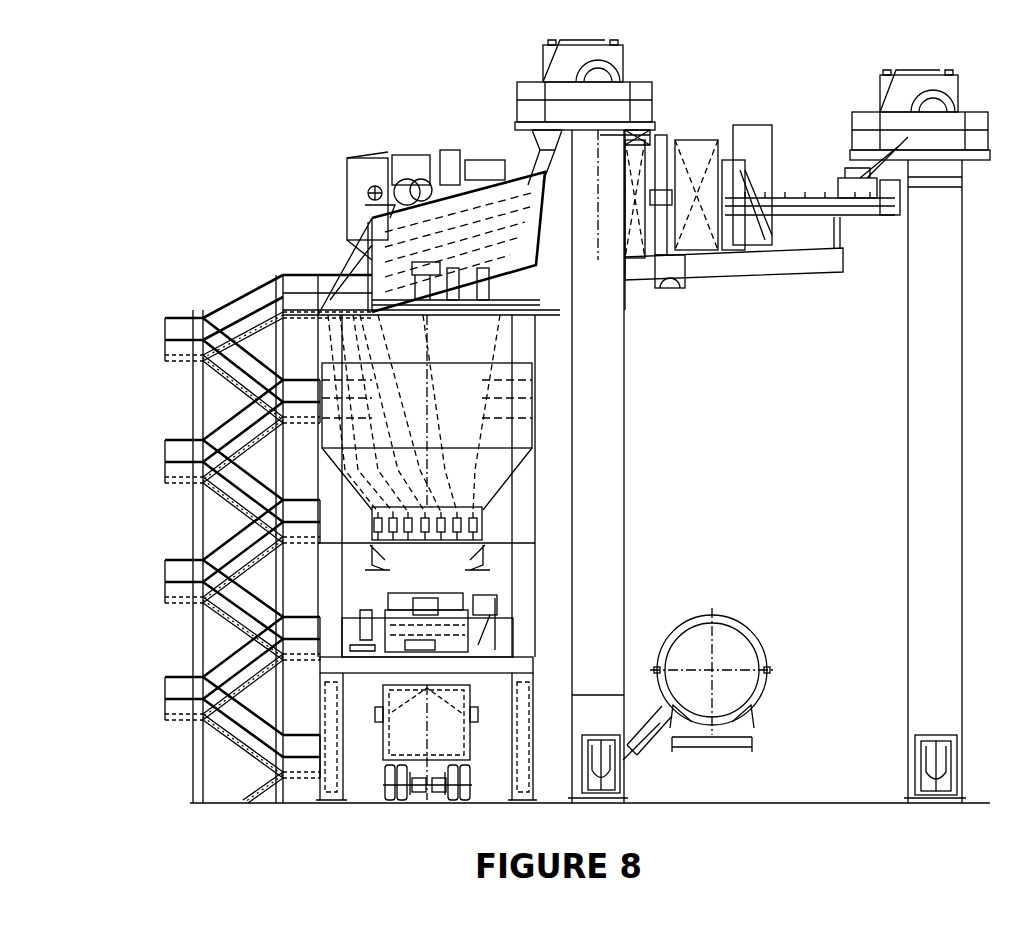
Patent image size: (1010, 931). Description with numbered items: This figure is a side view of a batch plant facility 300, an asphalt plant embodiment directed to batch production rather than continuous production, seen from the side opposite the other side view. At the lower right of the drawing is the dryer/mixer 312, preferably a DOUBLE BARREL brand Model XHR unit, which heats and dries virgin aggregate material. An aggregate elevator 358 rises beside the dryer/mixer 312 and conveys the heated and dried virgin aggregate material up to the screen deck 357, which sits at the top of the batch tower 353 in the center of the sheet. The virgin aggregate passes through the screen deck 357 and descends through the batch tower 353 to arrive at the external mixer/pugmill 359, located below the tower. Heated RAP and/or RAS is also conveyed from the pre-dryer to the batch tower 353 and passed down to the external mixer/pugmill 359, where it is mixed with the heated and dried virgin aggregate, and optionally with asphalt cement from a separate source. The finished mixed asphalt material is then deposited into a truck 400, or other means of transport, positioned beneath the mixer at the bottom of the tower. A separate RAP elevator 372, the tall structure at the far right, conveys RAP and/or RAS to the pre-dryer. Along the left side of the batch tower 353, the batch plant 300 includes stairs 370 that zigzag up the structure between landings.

The batch plant facility 300 is at (297, 70).
The screen deck 357 is at (502, 182).
The batch tower 353 is at (318, 348).
The stairs 370 is at (165, 438).
The RAP elevator 372 is at (905, 385).
The aggregate elevator 358 is at (628, 455).
The external mixer/pugmill 359 is at (514, 628).
The dryer/mixer 312 is at (733, 620).
The truck 400 is at (380, 748).